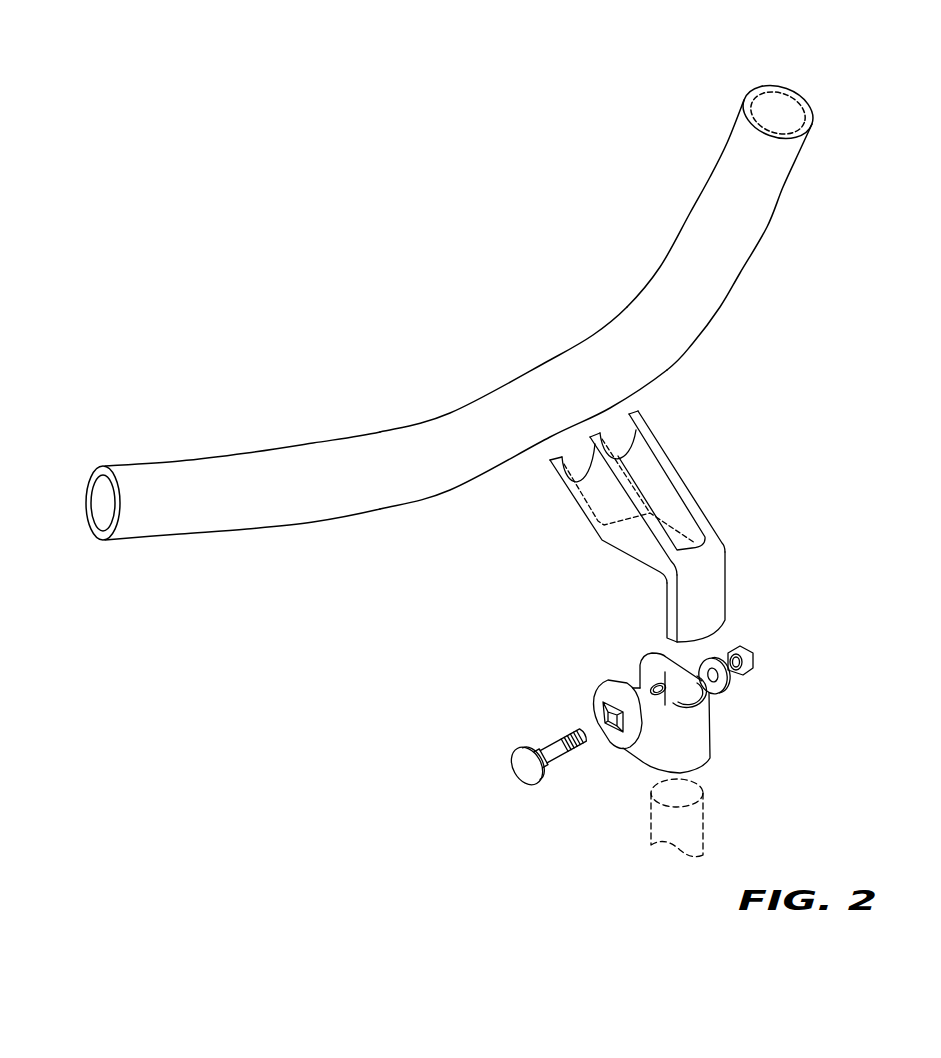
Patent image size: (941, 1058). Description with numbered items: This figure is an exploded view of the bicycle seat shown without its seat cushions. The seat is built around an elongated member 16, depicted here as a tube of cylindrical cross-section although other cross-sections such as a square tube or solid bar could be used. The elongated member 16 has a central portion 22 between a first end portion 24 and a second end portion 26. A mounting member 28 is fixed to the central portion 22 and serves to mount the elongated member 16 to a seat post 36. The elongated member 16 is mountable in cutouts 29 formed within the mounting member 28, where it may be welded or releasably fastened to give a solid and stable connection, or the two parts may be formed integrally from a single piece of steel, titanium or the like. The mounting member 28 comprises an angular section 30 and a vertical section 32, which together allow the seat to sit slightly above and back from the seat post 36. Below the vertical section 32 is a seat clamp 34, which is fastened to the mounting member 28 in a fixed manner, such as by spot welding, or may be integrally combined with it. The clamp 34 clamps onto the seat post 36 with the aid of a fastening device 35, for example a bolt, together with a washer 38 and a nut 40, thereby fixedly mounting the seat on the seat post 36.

The elongated member 16 is at (453, 308).
The central portion 22 is at (562, 404).
The first end portion 24 is at (141, 512).
The second end portion 26 is at (742, 161).
The mounting member 28 is at (650, 517).
The cutouts 29 is at (577, 466).
The angular section 30 is at (611, 487).
The vertical section 32 is at (717, 587).
The seat clamp 34 is at (702, 743).
The fastening device 35 is at (521, 758).
The seat post 36 is at (697, 825).
The washer 38 is at (730, 687).
The nut 40 is at (752, 652).